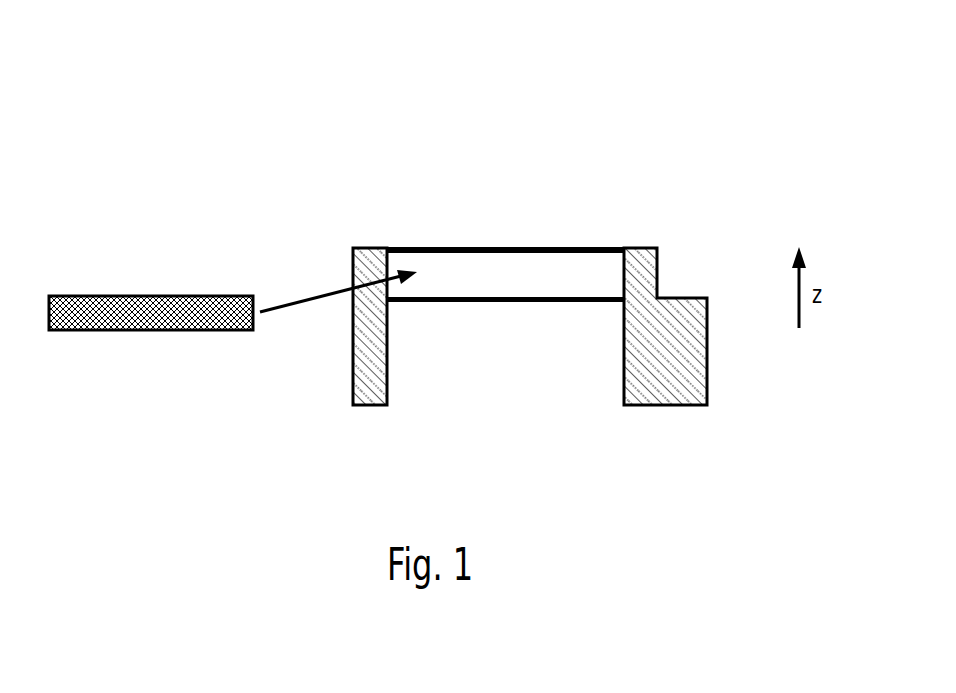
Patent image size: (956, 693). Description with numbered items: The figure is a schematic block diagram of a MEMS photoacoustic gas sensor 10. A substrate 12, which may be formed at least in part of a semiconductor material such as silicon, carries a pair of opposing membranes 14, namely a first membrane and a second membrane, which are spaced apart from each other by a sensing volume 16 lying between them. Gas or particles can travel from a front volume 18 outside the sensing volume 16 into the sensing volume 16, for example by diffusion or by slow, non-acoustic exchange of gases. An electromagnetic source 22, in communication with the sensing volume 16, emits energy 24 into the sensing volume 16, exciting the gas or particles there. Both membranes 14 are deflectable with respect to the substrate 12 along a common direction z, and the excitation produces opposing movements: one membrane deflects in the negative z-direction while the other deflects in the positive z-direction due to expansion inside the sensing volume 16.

The MEMS photoacoustic gas sensor 10 is at (818, 81).
The substrate 12 is at (353, 368).
The membranes 14 is at (505, 279).
The sensing volume 16 is at (494, 264).
The front volume 18 is at (479, 390).
The electromagnetic source 22 is at (127, 330).
The energy 24 is at (290, 300).